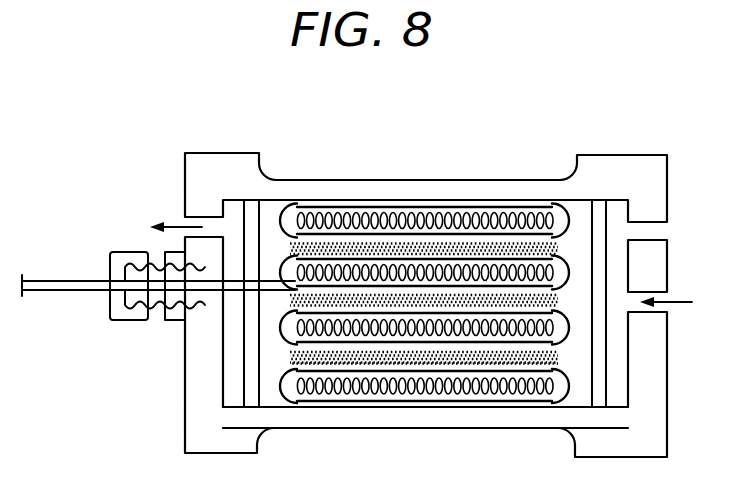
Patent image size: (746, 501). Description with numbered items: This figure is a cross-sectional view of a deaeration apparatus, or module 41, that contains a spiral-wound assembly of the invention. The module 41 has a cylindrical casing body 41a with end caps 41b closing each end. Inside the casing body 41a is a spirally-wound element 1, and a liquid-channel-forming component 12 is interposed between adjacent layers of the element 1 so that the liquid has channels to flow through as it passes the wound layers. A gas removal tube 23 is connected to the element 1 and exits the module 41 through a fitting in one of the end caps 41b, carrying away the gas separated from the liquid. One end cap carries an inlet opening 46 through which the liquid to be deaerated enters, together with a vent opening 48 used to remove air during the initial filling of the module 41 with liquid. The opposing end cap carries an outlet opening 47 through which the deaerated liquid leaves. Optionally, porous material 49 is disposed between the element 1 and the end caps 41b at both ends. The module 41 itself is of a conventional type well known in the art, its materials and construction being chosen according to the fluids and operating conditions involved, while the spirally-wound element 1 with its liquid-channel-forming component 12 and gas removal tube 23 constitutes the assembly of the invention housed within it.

The spirally-wound element 1 is at (283, 212).
The liquid-channel-forming component 12 is at (382, 240).
The gas removal tube 23 is at (73, 291).
The module 41 is at (480, 158).
The cylindrical casing body 41a is at (340, 418).
The end caps 41b is at (206, 165).
The inlet opening 46 is at (666, 298).
The outlet opening 47 is at (190, 220).
The vent opening 48 is at (657, 231).
The porous material 49 is at (244, 350).